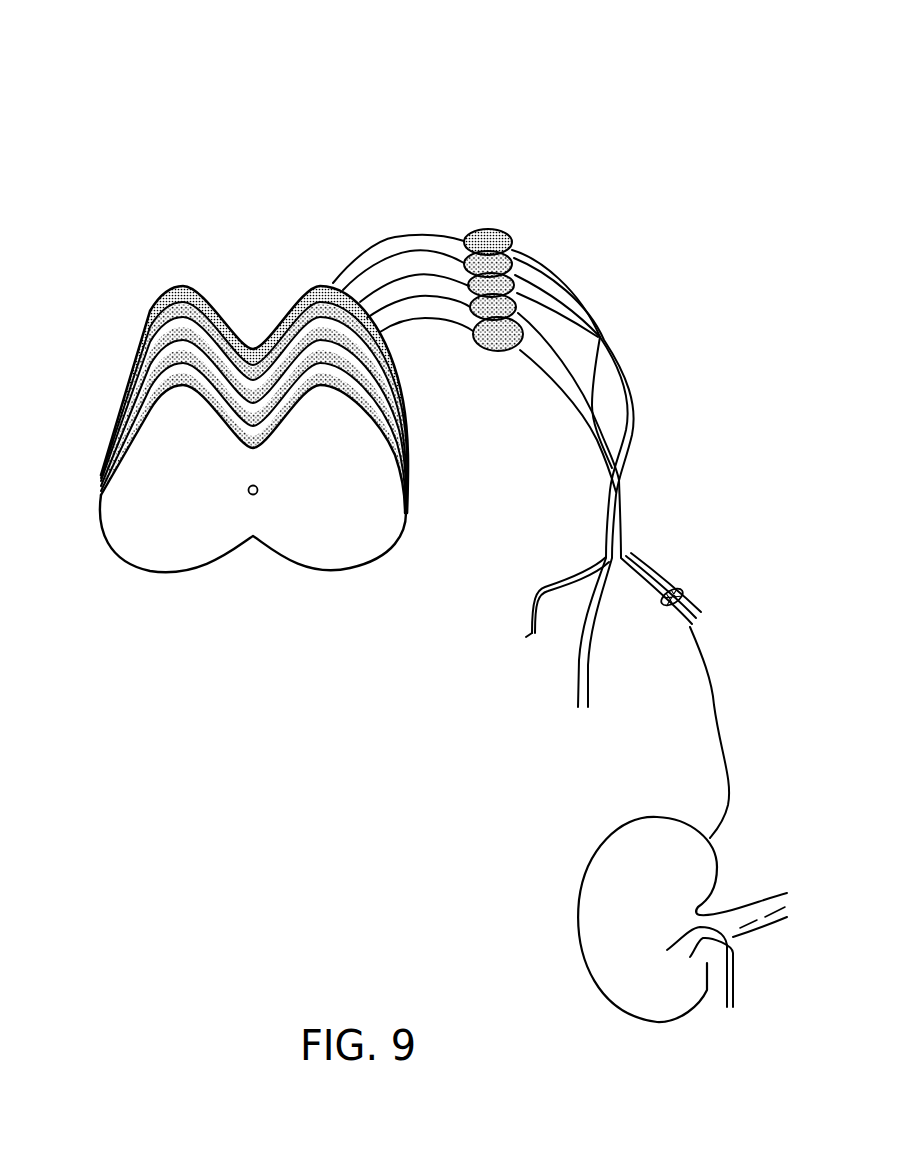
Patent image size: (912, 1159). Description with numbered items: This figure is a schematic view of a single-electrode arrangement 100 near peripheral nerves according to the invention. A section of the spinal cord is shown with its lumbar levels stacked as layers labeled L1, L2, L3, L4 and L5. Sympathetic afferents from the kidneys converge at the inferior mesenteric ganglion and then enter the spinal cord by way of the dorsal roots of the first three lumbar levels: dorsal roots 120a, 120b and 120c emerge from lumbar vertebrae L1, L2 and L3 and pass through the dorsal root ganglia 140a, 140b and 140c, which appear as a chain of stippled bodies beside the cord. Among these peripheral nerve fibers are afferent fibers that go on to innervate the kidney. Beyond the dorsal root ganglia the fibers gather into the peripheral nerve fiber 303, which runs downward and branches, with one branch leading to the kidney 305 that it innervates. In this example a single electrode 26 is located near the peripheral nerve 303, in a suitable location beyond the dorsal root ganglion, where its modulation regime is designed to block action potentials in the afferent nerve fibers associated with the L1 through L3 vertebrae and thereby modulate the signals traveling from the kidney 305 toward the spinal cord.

The system 100 is at (108, 50).
The L1 lumbar vertebra L1 is at (181, 289).
The L2 lumbar vertebra L2 is at (178, 313).
The L3 lumbar vertebra L3 is at (173, 334).
The L4 vertebral level L4 is at (171, 359).
The L5 vertebral level L5 is at (161, 389).
The dorsal root 120a is at (387, 237).
The dorsal root 120b is at (435, 252).
The dorsal root 120c is at (407, 278).
The dorsal root ganglion 140a is at (488, 229).
The dorsal root ganglion 140b is at (513, 260).
The dorsal root ganglion 140c is at (514, 290).
The peripheral nerve fiber 303 is at (625, 567).
The electrode 26 is at (683, 597).
The kidney 305 is at (593, 893).